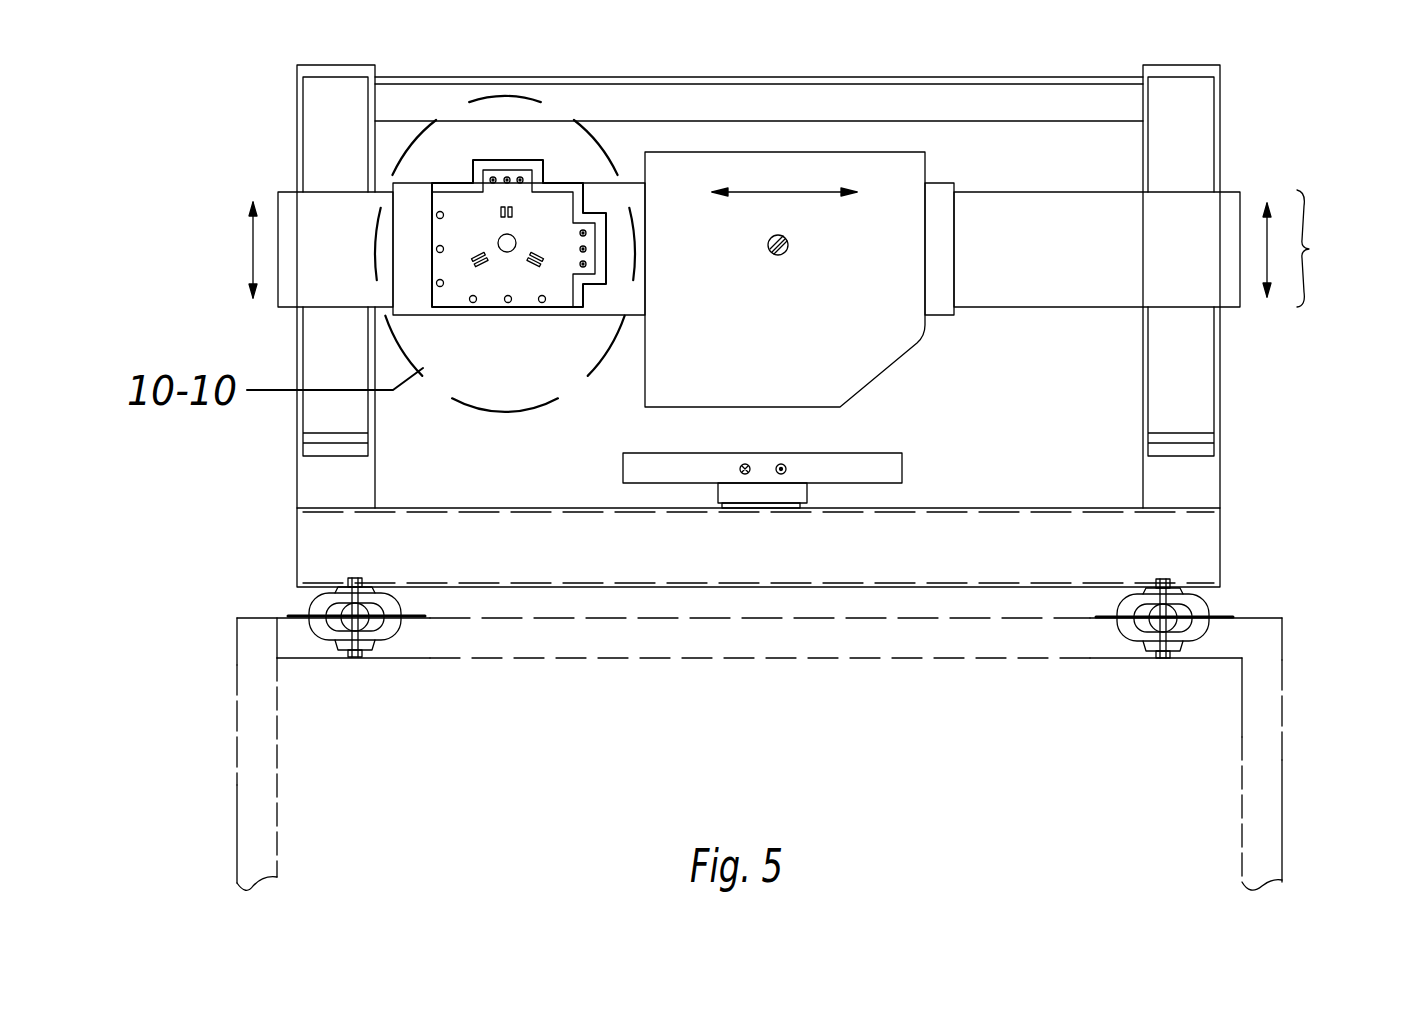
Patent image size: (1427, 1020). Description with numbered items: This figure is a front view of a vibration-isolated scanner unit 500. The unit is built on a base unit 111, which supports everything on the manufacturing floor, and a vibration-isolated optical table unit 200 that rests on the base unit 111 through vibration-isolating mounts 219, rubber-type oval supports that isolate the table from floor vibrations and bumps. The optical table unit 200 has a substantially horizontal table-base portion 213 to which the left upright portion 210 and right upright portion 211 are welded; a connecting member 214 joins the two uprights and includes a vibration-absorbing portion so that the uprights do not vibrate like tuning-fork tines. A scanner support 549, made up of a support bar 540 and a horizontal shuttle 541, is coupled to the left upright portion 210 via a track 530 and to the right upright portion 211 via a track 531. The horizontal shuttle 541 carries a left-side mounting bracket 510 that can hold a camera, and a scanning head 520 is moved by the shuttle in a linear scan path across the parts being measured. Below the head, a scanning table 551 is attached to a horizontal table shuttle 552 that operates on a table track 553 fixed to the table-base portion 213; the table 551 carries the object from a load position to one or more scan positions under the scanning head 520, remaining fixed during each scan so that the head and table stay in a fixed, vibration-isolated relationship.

The base unit 111 is at (277, 806).
The optical table unit 200 is at (748, 324).
The left upright portion 210 is at (297, 120).
The right upright portion 211 is at (1220, 106).
The table-base portion 213 is at (1030, 508).
The connecting member 214 is at (1025, 118).
The vibration-isolating mounts 219 is at (383, 637).
The vibration-isolated scanner unit 500 is at (823, 327).
The left-side mounting bracket 510 is at (493, 299).
The scanning head 520 is at (887, 365).
The track 530 is at (312, 135).
The track 531 is at (1202, 138).
The support bar 540 is at (1113, 300).
The horizontal shuttle 541 is at (945, 234).
The scanner support 549 is at (1318, 248).
The scanning table 551 is at (877, 453).
The horizontal table shuttle 552 is at (808, 492).
The table track 553 is at (718, 503).